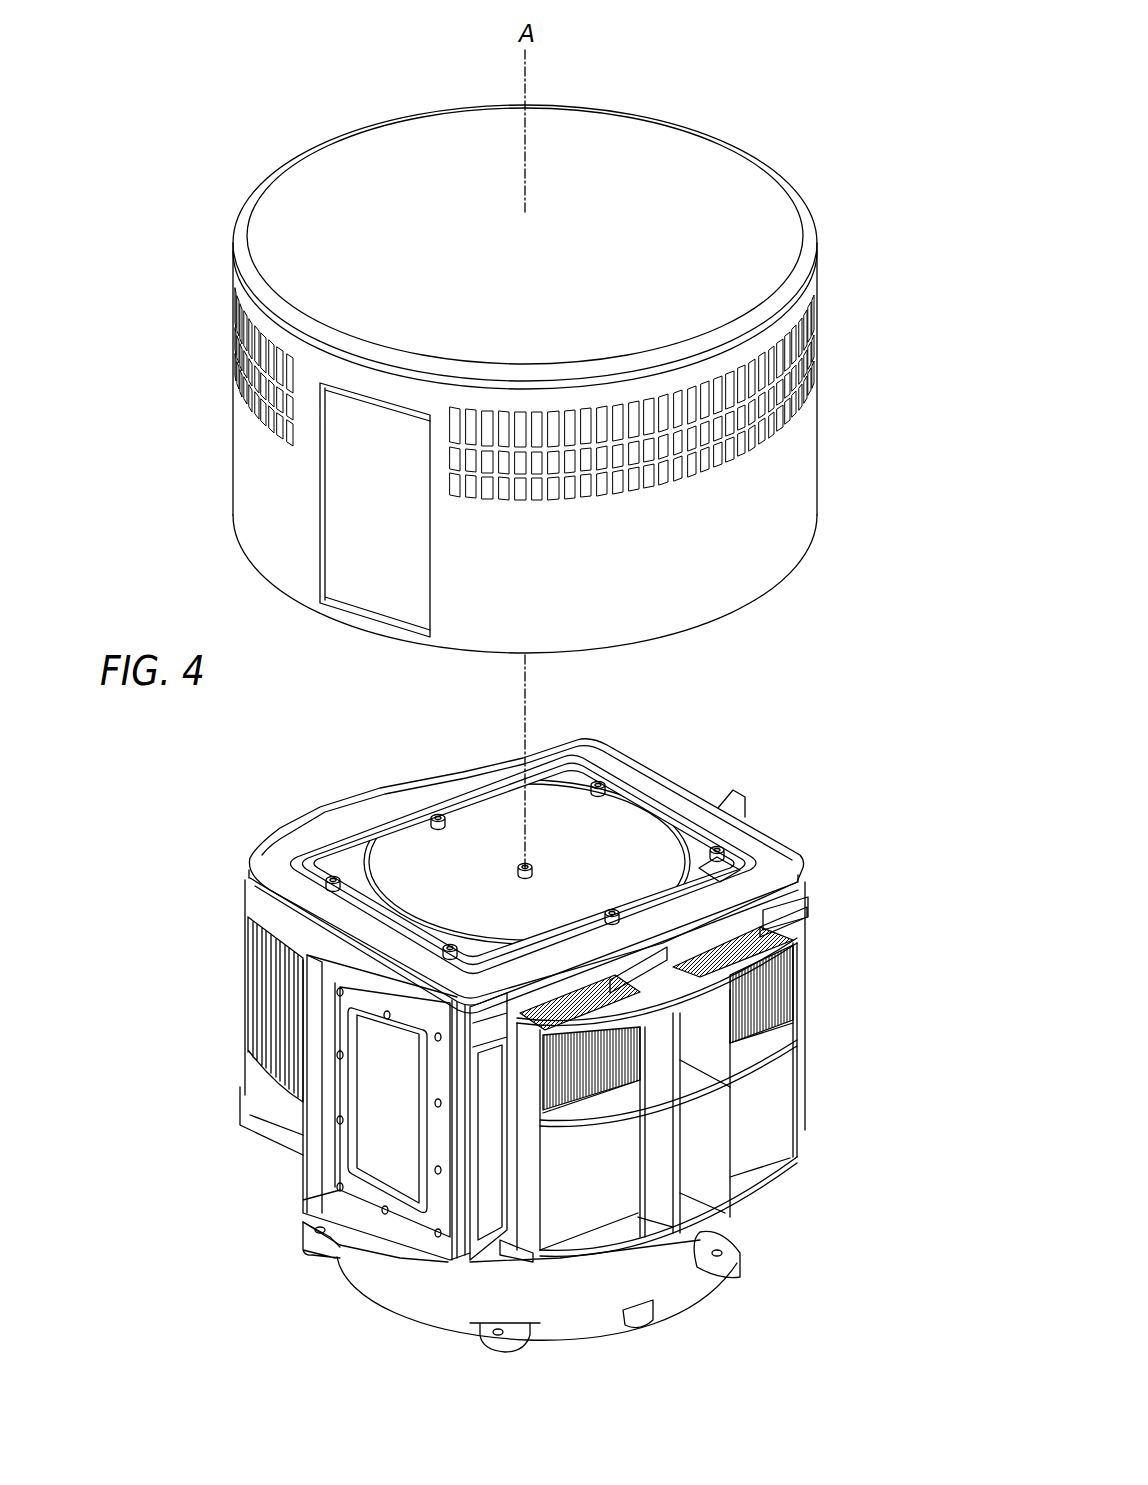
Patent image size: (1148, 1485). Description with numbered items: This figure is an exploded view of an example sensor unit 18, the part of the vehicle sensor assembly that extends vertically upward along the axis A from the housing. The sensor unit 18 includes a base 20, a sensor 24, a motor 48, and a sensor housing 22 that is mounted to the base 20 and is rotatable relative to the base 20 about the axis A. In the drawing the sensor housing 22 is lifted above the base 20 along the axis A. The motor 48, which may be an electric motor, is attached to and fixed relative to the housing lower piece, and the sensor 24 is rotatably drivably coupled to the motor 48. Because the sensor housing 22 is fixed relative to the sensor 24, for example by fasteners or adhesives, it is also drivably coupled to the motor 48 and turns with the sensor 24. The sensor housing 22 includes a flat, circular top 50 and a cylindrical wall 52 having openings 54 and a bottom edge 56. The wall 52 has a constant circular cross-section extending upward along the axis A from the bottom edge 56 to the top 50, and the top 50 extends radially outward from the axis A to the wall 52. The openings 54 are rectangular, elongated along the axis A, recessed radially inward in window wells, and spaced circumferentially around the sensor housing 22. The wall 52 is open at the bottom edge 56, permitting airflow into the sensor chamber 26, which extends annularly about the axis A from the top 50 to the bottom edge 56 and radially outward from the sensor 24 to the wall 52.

The sensor unit 18 is at (253, 88).
The base 20 is at (658, 1276).
The sensor housing 22 is at (808, 200).
The sensor 24 is at (375, 1152).
The sensor chamber 26 is at (338, 683).
The motor 48 is at (580, 1340).
The top 50 is at (645, 135).
The wall 52 is at (805, 465).
The openings 54 is at (325, 500).
The bottom edge 56 is at (740, 620).